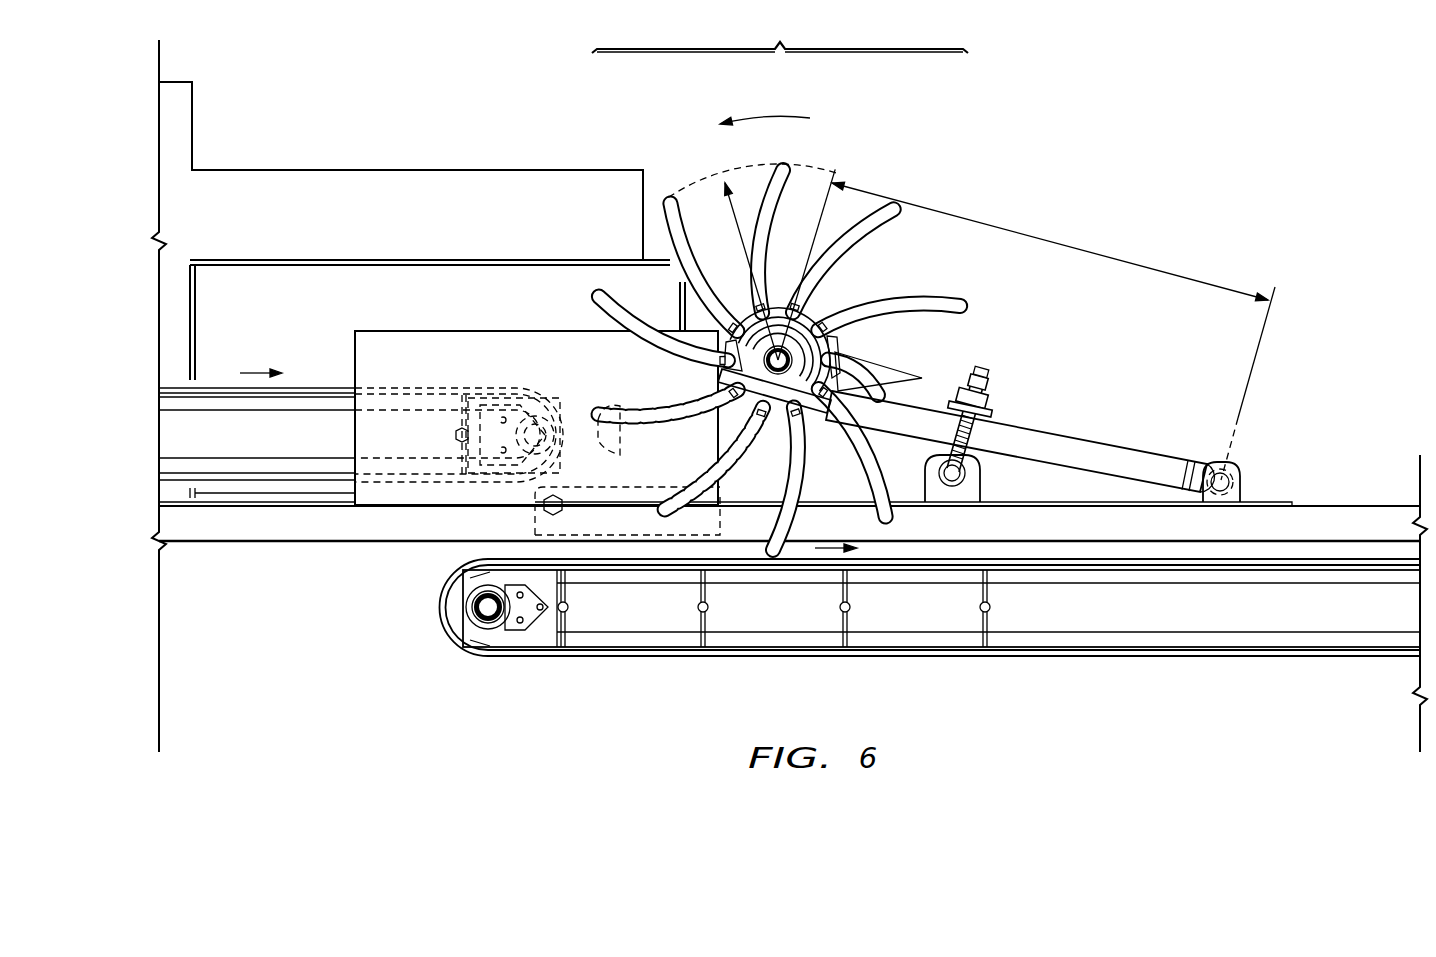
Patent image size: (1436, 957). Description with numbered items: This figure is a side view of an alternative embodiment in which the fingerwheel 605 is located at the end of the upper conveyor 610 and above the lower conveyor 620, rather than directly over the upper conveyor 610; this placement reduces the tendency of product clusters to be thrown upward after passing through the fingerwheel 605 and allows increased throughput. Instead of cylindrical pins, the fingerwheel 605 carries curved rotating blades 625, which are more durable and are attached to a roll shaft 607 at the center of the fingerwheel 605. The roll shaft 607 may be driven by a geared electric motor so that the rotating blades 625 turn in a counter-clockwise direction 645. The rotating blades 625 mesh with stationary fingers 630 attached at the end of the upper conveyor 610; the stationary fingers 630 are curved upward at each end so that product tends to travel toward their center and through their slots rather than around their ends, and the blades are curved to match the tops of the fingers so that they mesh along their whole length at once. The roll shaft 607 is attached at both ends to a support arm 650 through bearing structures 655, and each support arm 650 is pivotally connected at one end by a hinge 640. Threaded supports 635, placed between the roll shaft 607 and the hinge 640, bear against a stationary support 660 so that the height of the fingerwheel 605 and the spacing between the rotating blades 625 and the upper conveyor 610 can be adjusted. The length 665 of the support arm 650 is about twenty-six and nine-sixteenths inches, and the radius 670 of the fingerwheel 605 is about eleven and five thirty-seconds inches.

The fingerwheel 605 is at (780, 30).
The roll shaft 607 is at (828, 337).
The upper conveyor 610 is at (322, 386).
The lower conveyor 620 is at (935, 660).
The rotating blades 625 is at (785, 175).
The stationary fingers 630 is at (619, 453).
The threaded supports 635 is at (990, 396).
The hinges 640 is at (1244, 472).
The counter-clockwise direction 645 is at (765, 118).
The support arm 650 is at (1103, 440).
The bearing structures 655 is at (782, 383).
The stationary support 660 is at (976, 487).
The length of the support arm 665 is at (1110, 256).
The radius of the fingerwheel 670 is at (722, 196).